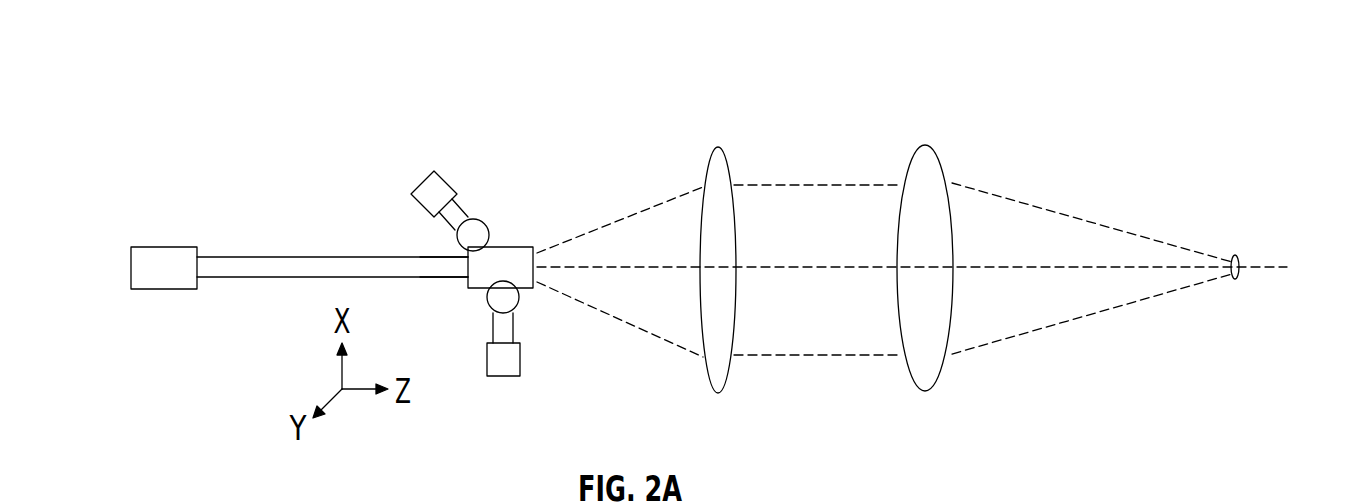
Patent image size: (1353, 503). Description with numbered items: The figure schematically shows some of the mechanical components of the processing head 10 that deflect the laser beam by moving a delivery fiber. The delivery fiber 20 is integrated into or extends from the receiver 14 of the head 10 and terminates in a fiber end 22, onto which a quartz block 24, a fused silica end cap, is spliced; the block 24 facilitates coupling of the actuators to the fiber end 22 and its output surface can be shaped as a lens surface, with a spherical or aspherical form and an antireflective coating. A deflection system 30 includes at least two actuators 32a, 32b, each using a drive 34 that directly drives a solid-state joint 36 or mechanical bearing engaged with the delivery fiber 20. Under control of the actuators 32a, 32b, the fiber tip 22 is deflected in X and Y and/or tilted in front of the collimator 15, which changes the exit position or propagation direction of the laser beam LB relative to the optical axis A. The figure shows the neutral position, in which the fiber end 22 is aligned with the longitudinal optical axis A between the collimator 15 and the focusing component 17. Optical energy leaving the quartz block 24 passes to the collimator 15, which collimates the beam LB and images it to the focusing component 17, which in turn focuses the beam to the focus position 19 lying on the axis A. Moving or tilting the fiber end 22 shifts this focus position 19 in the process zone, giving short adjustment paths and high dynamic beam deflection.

The processing head 10 is at (157, 75).
The receiver 14 is at (163, 247).
The collimator 15 is at (718, 148).
The focusing component 17 is at (925, 145).
The focus position 19 is at (1241, 272).
The delivery fiber 20 is at (275, 277).
The fiber end 22 is at (455, 277).
The quartz block 24 is at (513, 247).
The deflection system 30 is at (474, 265).
The actuator 32a is at (423, 175).
The actuator 32b is at (508, 393).
The drive 34 is at (420, 185).
The solid-state joint 36 is at (445, 218).
The laser beam LB is at (1080, 217).
The optical axis A is at (1283, 268).